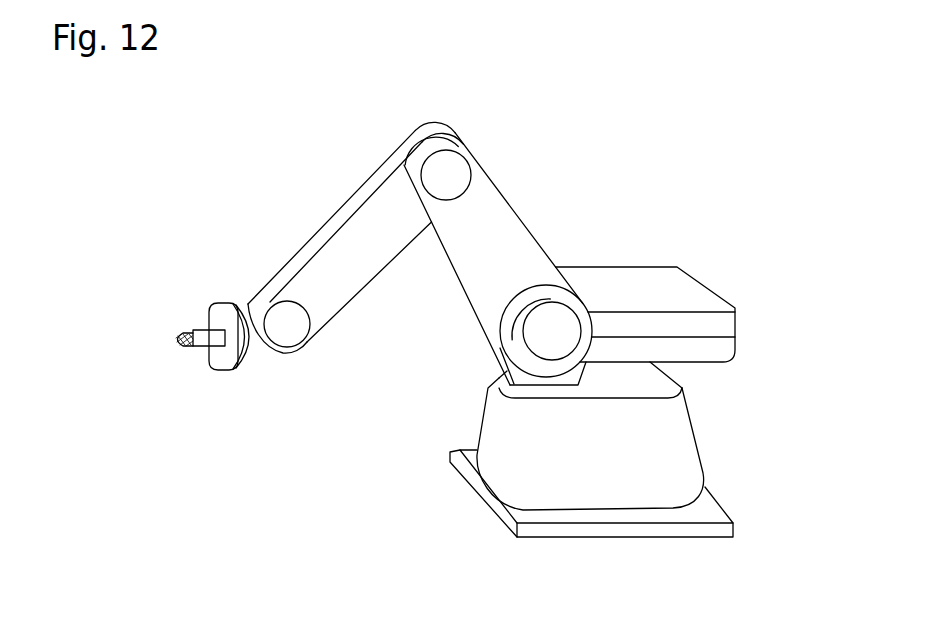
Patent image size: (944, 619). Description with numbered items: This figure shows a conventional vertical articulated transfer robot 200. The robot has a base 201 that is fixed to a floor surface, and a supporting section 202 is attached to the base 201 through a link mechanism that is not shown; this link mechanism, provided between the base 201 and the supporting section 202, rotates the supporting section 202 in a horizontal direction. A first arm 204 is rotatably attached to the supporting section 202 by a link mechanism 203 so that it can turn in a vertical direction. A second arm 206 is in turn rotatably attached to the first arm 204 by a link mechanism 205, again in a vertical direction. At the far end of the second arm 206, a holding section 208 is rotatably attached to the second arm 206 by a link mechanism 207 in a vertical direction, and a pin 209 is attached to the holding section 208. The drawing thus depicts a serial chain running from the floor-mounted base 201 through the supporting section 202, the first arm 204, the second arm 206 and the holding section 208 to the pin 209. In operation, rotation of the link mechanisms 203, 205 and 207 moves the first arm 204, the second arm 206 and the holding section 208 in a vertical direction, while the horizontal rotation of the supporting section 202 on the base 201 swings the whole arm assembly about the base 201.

The vertical articulated robot 200 is at (859, 113).
The base 201 is at (673, 433).
The supporting section 202 is at (630, 287).
The link mechanism 203 is at (543, 335).
The first arm 204 is at (487, 215).
The link mechanism 205 is at (447, 168).
The second arm 206 is at (358, 250).
The link mechanism 207 is at (292, 328).
The holding section 208 is at (235, 353).
The pin 209 is at (203, 329).